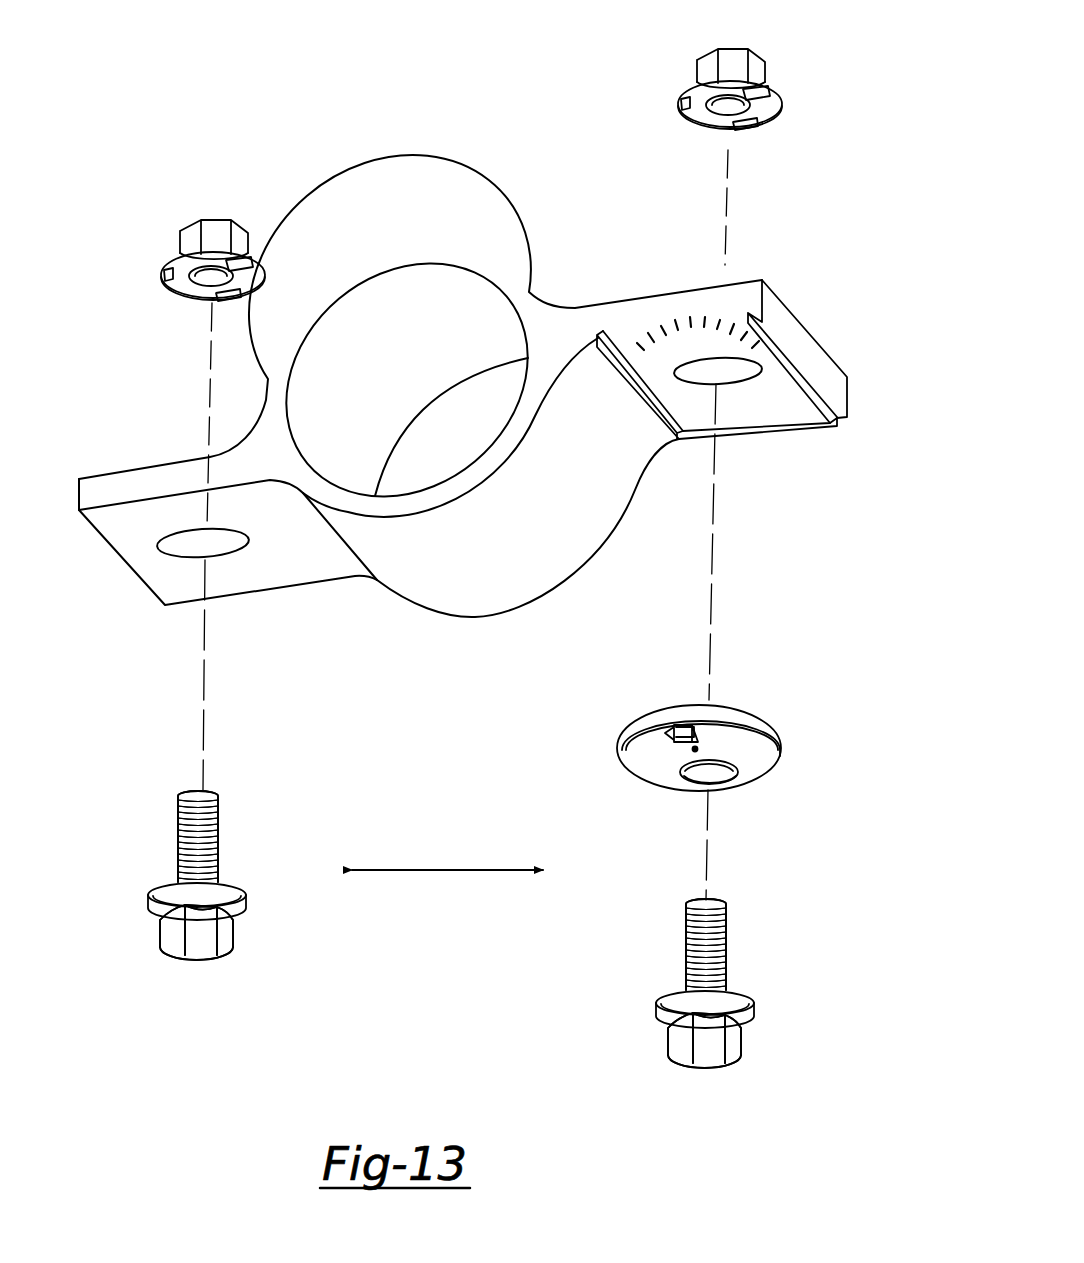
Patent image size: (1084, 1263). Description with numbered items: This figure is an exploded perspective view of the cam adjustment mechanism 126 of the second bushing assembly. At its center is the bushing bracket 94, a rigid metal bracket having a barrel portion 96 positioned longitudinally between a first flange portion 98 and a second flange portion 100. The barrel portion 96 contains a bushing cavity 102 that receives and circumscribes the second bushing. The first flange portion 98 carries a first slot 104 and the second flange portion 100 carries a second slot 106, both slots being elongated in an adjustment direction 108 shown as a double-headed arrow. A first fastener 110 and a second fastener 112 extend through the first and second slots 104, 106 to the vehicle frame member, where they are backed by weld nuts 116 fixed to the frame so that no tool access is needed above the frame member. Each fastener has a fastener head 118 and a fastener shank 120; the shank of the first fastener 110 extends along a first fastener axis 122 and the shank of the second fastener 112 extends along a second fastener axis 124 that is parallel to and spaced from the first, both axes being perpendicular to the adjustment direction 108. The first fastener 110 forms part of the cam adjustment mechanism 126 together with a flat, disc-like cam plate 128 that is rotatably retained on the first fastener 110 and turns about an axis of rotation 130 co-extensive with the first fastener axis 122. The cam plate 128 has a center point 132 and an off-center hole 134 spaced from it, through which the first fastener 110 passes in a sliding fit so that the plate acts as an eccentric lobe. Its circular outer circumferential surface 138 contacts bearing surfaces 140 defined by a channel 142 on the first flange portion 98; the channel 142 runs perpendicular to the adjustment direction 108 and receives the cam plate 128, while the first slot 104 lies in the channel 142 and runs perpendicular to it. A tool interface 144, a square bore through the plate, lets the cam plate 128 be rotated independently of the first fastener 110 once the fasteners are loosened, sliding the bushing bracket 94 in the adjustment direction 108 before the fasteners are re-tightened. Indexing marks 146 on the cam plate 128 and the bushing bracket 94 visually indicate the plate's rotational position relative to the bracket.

The bushing bracket 94 is at (482, 624).
The barrel portion 96 is at (543, 562).
The first flange portion 98 is at (758, 380).
The second flange portion 100 is at (228, 573).
The bushing cavity 102 is at (393, 330).
The first slot 104 is at (733, 369).
The second slot 106 is at (180, 549).
The adjustment direction 108 is at (448, 872).
The first fastener 110 is at (762, 955).
The second fastener 112 is at (158, 850).
The weld nut 116 is at (707, 70).
The fastener head 118 is at (198, 952).
The fastener shank 120 is at (203, 824).
The first fastener axis 122 is at (712, 585).
The second fastener axis 124 is at (203, 670).
The cam adjustment mechanism 126 is at (702, 783).
The cam plate 128 is at (662, 778).
The axis of rotation 130 is at (706, 868).
The center point 132 is at (695, 752).
The off-center hole 134 is at (722, 780).
The outer circumferential surface 138 is at (642, 727).
The bearing surface 140 is at (740, 317).
The channel 142 is at (768, 424).
The tool interface 144 is at (692, 742).
The indexing marks 146 is at (640, 347).